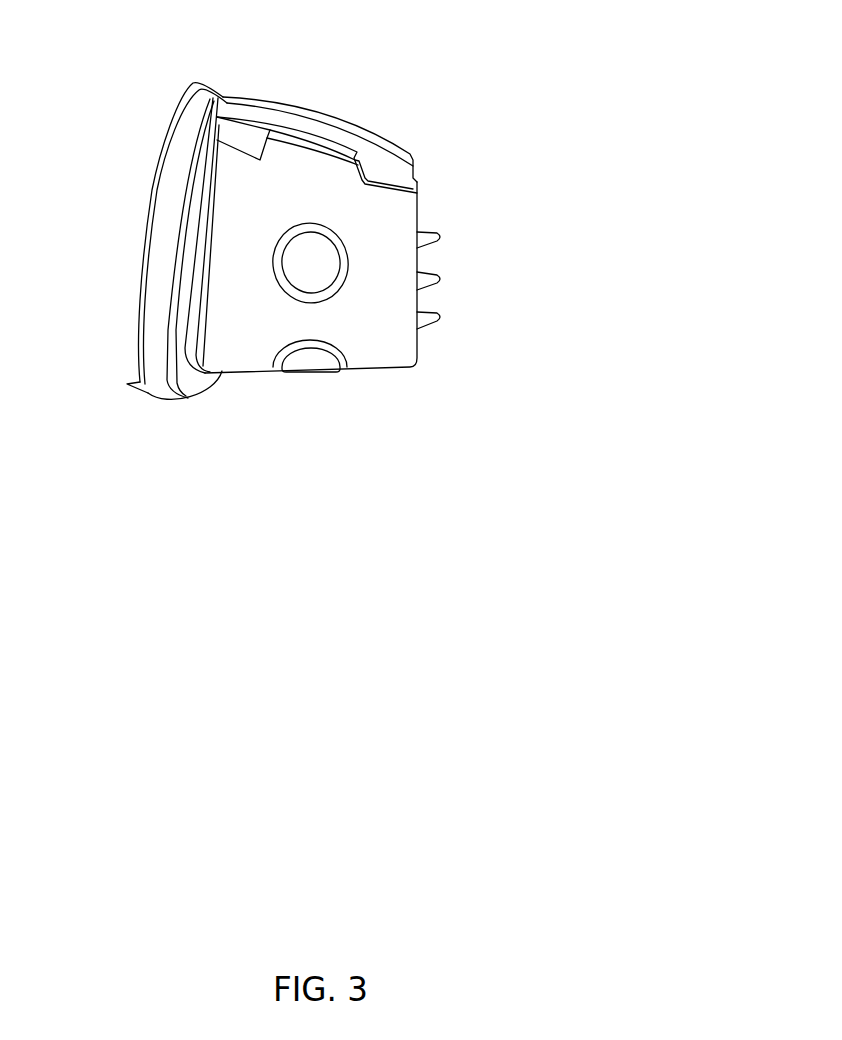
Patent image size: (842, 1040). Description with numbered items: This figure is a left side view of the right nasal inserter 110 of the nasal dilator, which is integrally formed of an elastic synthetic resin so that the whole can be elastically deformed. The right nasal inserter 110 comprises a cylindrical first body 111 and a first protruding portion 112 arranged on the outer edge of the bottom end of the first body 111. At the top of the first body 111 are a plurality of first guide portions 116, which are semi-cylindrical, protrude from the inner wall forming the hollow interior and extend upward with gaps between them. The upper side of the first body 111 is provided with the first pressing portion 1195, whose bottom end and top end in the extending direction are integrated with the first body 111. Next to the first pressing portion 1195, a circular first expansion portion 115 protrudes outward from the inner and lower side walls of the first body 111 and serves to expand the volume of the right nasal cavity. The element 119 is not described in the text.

The right nasal inserter 110 is at (362, 85).
The first body 111 is at (392, 355).
The first protruding portion 112 is at (129, 383).
The first expansion portion 115 is at (278, 270).
The first guide portions 116 is at (441, 236).
The flange 119 is at (158, 255).
The first pressing portion 1195 is at (385, 150).